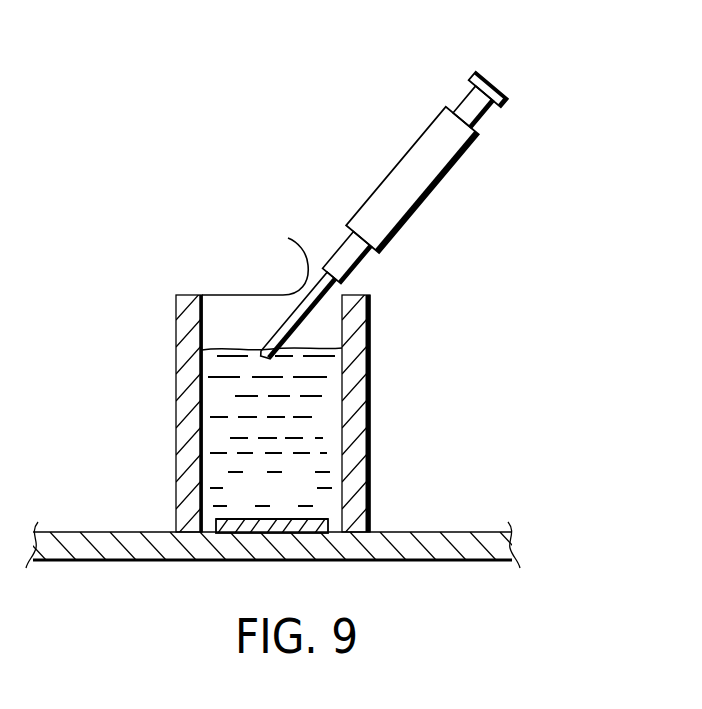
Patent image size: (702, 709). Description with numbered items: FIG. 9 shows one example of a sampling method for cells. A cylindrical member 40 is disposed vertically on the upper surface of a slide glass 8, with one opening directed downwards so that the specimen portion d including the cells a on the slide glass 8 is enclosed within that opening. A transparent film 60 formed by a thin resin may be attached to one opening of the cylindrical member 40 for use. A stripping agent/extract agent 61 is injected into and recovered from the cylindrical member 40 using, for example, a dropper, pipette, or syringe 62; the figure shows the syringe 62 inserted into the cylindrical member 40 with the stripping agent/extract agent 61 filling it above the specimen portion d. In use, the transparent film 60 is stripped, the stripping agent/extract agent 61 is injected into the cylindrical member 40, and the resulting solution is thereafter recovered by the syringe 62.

The slide glass 8 is at (448, 548).
The cylindrical member 40 is at (360, 340).
The transparent film 60 is at (244, 295).
The stripping agent/extract agent 61 is at (330, 415).
The syringe 62 is at (390, 168).
The specimen portion d is at (239, 517).
The cells a is at (282, 517).